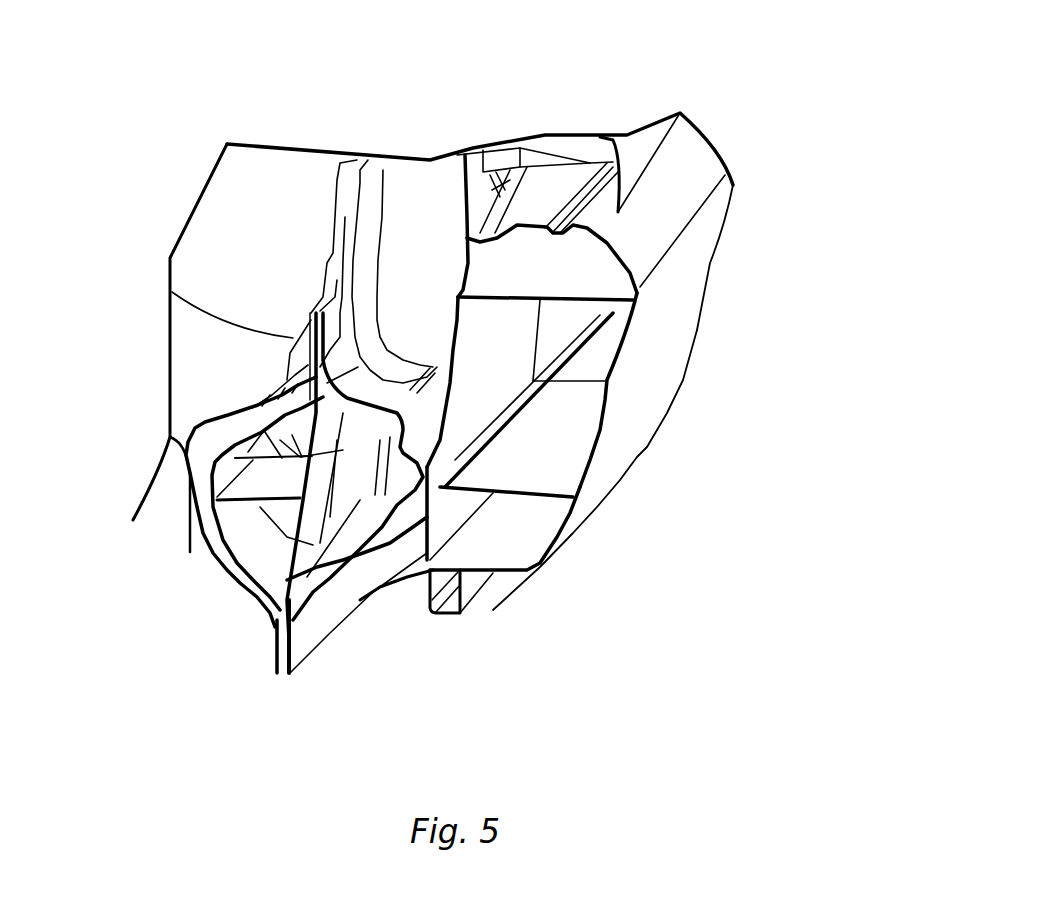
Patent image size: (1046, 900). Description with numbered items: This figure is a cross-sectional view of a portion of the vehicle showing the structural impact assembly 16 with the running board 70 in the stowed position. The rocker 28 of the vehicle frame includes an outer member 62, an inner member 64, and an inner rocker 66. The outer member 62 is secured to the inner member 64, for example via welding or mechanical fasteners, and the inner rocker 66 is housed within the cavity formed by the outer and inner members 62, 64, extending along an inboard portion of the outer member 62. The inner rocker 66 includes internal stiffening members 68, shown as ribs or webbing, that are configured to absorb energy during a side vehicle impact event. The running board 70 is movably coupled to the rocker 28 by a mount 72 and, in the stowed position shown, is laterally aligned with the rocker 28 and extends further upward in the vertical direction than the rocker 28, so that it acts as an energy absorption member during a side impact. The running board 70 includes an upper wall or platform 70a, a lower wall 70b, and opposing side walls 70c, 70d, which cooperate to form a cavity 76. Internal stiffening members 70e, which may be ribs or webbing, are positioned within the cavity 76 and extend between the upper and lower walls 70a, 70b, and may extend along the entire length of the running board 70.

The structural impact assembly 16 is at (573, 637).
The rocker 28 is at (219, 581).
The outer member 62 is at (323, 637).
The inner member 64 is at (272, 615).
The inner rocker 66 is at (271, 581).
The internal stiffening members 68 is at (350, 558).
The running board 70 is at (675, 343).
The upper wall 70a is at (470, 377).
The lower wall 70b is at (637, 432).
The side wall 70c is at (513, 577).
The side wall 70d is at (593, 145).
The internal stiffening members 70e is at (567, 273).
The mount 72 is at (410, 577).
The cavity 76 is at (573, 310).